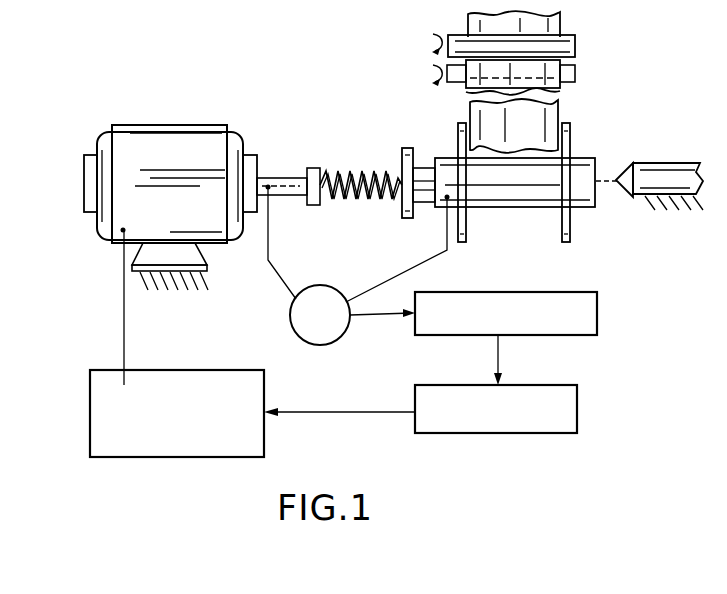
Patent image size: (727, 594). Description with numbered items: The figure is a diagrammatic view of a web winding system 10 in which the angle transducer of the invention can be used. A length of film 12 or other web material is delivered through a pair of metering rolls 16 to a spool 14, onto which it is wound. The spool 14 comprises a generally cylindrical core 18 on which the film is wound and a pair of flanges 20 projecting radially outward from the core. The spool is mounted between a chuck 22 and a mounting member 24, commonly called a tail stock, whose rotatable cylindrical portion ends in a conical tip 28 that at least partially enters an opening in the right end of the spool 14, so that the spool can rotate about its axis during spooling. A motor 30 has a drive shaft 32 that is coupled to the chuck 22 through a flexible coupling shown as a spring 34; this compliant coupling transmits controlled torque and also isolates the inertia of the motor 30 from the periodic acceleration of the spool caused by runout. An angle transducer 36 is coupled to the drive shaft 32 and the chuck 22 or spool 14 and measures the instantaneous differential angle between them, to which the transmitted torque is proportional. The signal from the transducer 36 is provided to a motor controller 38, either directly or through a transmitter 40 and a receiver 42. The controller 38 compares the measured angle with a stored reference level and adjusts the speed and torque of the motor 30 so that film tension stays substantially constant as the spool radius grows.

The web winding system 10 is at (98, 278).
The film 12 is at (485, 122).
The spool 14 is at (600, 168).
The metering rolls 16 is at (577, 68).
The core 18 is at (583, 207).
The flanges 20 is at (558, 221).
The chuck 22 is at (403, 212).
The mounting member 24 is at (658, 163).
The conical tip 28 is at (619, 174).
The motor 30 is at (197, 141).
The drive shaft 32 is at (289, 175).
The spring 34 is at (350, 172).
The angle transducer 36 is at (291, 314).
The motor controller 38 is at (209, 373).
The transmitter 40 is at (468, 334).
The receiver 42 is at (537, 385).